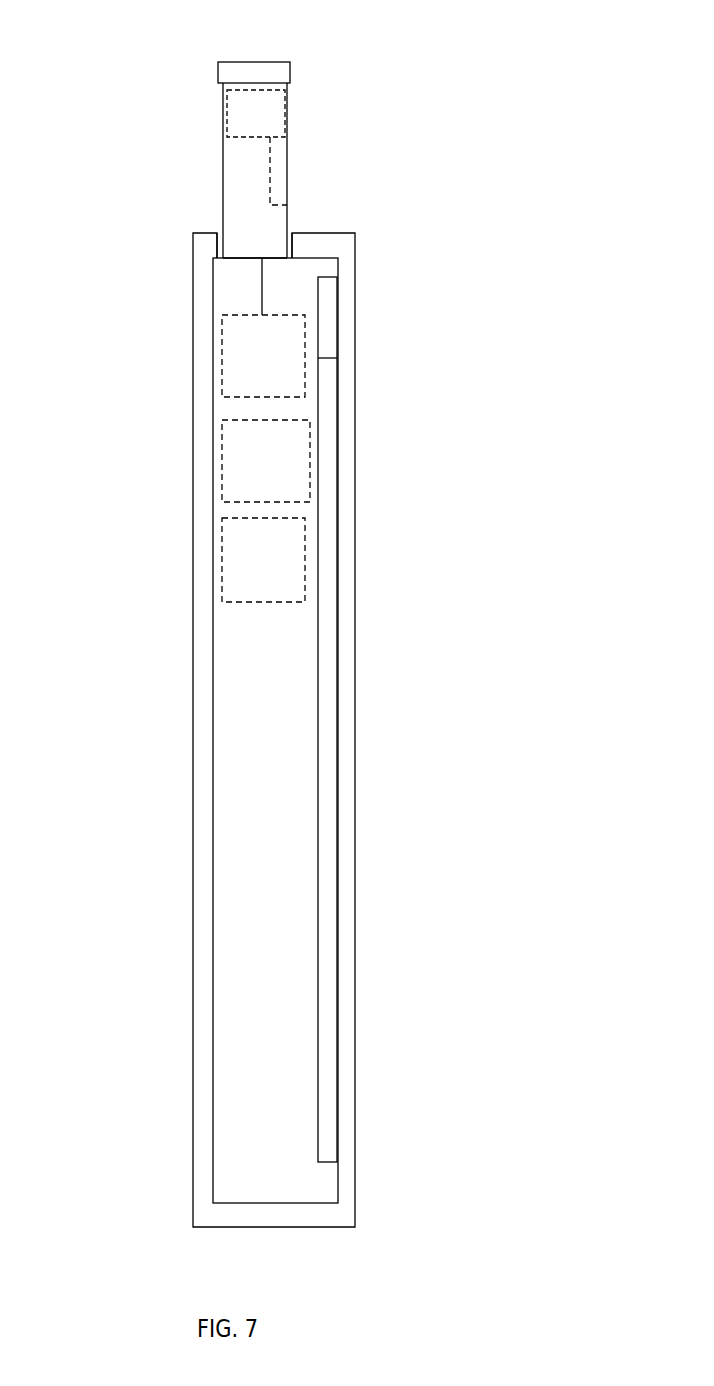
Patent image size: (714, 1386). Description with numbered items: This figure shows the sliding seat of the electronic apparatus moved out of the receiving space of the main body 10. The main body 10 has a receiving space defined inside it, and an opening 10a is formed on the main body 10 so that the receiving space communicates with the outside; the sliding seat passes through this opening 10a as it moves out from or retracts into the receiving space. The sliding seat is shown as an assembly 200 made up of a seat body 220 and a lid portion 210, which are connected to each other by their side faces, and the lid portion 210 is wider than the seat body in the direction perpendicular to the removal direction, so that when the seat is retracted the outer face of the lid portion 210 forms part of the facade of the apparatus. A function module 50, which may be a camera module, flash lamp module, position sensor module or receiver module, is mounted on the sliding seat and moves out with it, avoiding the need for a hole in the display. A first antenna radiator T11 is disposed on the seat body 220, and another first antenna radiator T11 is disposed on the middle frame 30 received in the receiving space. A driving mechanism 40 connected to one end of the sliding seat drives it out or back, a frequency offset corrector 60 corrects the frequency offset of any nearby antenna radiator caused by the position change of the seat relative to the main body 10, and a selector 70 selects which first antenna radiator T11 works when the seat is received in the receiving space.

The main body 10 is at (207, 303).
The opening 10a is at (292, 235).
The movable module 200 is at (181, 156).
The lid portion 210 is at (230, 150).
The seat body 220 is at (236, 73).
The function module 50 is at (284, 105).
The first antenna radiator T11 is at (280, 137).
The middle frame 30 is at (328, 510).
The driving mechanism 40 is at (237, 381).
The frequency offset corrector 60 is at (237, 490).
The selector 70 is at (248, 585).